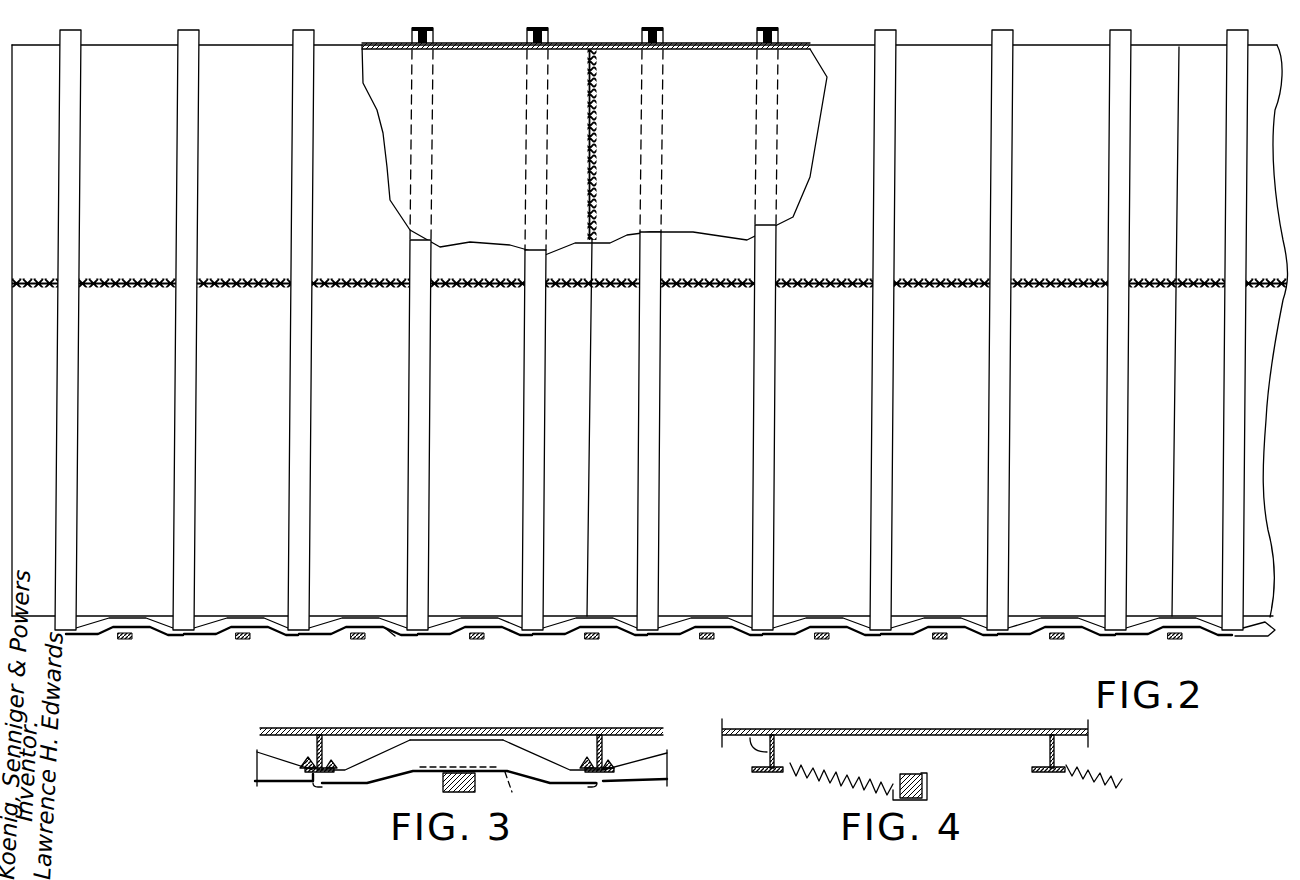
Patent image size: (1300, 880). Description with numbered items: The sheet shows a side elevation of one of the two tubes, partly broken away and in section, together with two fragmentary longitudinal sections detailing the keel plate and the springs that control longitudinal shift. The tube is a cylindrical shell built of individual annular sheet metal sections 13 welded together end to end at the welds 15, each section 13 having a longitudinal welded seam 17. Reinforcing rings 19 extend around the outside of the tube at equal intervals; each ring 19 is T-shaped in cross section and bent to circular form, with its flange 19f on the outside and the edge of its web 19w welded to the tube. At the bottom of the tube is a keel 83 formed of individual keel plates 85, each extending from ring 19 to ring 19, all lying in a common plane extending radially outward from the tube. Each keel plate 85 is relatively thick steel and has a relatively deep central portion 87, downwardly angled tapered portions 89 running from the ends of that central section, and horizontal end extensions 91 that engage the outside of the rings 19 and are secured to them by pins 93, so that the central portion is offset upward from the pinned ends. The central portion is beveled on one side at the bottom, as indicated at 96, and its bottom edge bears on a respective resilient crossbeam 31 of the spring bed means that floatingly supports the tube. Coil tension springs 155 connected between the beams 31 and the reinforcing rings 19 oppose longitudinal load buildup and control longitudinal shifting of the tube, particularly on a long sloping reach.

In FIG. 2, the annular sheet metal section 13 is at (322, 634).
In FIG. 3, the annular sheet metal section 13 is at (627, 729).
In FIG. 4, the annular sheet metal section 13 is at (952, 730).
In FIG. 2, the end-to-end weld 15 is at (590, 178).
In FIG. 2, the longitudinal welded seam 17 is at (346, 287).
In FIG. 2, the reinforcing ring 19 is at (177, 358).
In FIG. 2, the web of reinforcing ring 19w is at (433, 34).
In FIG. 3, the web of reinforcing ring 19w is at (318, 738).
In FIG. 4, the web of reinforcing ring 19w is at (760, 736).
In FIG. 2, the flange of reinforcing ring 19f is at (412, 28).
In FIG. 3, the flange of reinforcing ring 19f is at (304, 771).
In FIG. 4, the flange of reinforcing ring 19f is at (758, 772).
In FIG. 2, the resilient crossbeam 31 is at (129, 641).
In FIG. 3, the resilient crossbeam 31 is at (442, 785).
In FIG. 4, the resilient crossbeam 31 is at (903, 772).
In FIG. 2, the keel 83 is at (393, 638).
In FIG. 2, the keel plate 85 is at (88, 636).
In FIG. 3, the keel plate 85 is at (367, 786).
In FIG. 2, the central portion of keel plate 87 is at (134, 616).
In FIG. 3, the central portion of keel plate 87 is at (453, 754).
In FIG. 3, the tapered portion of keel plate 89 is at (376, 760).
In FIG. 3, the horizontal end extension 91 is at (323, 778).
In FIG. 3, the pin 93 is at (312, 760).
In FIG. 3, the bevel 96 is at (506, 782).
In FIG. 4, the coil tension spring 155 is at (800, 782).